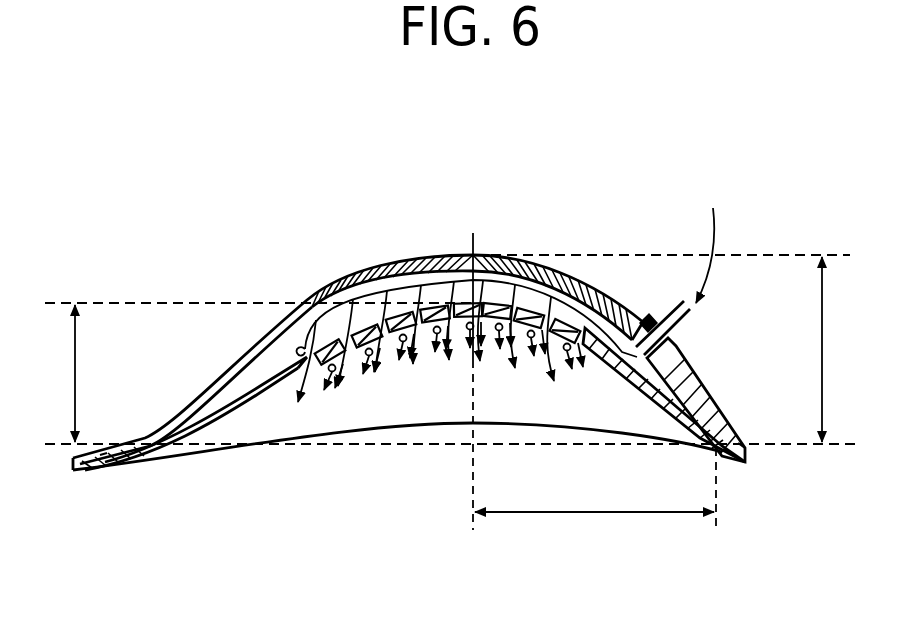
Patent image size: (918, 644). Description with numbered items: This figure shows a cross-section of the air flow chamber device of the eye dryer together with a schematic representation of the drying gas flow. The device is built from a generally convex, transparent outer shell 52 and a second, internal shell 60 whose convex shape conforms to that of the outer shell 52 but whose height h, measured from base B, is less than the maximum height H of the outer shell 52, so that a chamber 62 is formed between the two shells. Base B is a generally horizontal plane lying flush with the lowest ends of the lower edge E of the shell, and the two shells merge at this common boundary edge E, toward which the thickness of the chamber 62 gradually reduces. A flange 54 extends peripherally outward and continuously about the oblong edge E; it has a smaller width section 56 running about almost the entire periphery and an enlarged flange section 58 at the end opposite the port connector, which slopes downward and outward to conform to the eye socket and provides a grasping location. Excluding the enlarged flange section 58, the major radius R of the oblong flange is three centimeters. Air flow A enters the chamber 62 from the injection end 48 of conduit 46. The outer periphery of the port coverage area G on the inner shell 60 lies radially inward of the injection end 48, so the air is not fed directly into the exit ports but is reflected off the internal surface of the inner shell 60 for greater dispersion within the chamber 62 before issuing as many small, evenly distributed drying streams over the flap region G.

The conduit 46 is at (689, 322).
The injection end of conduit 48 is at (665, 357).
The outer shell 52 is at (418, 256).
The flange 54 is at (643, 325).
The smaller width flange section 56 is at (752, 445).
The enlarged flange section 58 is at (127, 465).
The internal shell 60 is at (262, 396).
The chamber 62 is at (270, 362).
The port coverage area G is at (540, 306).
The air flow A is at (710, 237).
The lower edge of shell E is at (107, 453).
The base B is at (420, 446).
The maximum height of outer shell H is at (450, 349).
The height of inner shell h is at (256, 372).
The major radius R is at (594, 391).